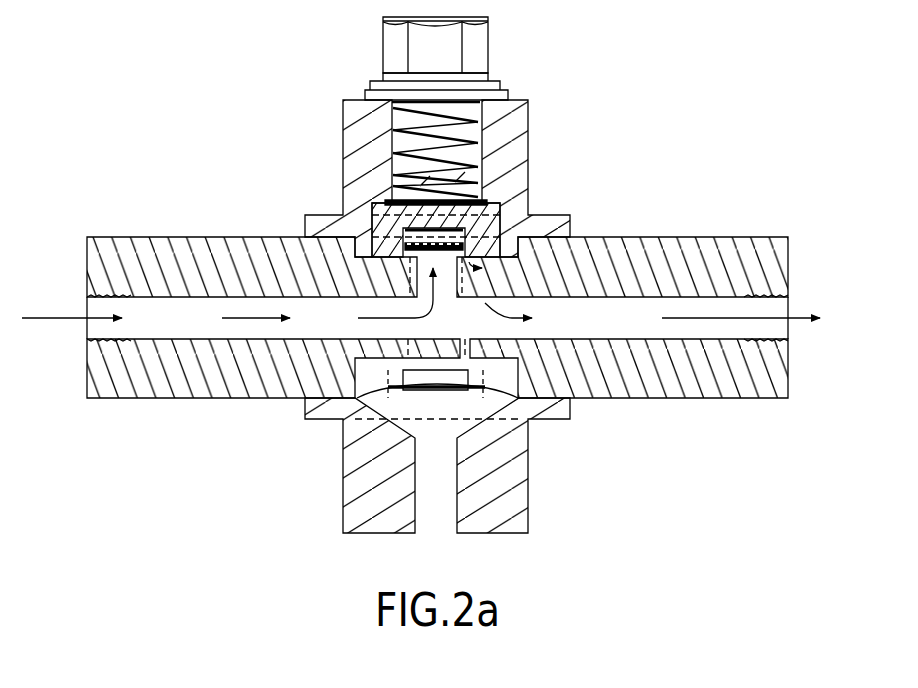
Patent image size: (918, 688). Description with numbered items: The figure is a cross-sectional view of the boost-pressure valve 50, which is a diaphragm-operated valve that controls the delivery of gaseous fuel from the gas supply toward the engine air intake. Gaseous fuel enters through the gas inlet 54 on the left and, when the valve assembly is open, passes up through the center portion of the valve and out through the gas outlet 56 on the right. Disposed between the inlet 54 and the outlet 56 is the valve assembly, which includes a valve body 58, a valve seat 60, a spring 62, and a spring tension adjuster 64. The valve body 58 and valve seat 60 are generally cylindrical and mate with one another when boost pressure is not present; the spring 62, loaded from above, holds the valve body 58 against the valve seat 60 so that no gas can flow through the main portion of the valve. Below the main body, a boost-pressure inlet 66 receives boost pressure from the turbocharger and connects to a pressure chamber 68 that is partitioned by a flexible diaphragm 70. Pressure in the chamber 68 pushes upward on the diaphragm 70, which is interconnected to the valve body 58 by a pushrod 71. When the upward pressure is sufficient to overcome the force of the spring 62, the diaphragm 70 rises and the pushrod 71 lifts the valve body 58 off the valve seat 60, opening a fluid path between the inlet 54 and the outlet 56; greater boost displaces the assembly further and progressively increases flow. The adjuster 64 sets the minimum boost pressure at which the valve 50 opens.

The boost-pressure valve 50 is at (95, 457).
The gas inlet 54 is at (87, 305).
The gas outlet 56 is at (788, 308).
The valve body 58 is at (385, 210).
The valve seat 60 is at (467, 226).
The spring 62 is at (400, 148).
The spring tension adjuster 64 is at (488, 35).
The boost-pressure inlet 66 is at (435, 522).
The pressure chamber 68 is at (395, 427).
The flexible diaphragm 70 is at (477, 395).
The pushrod 71 is at (403, 372).